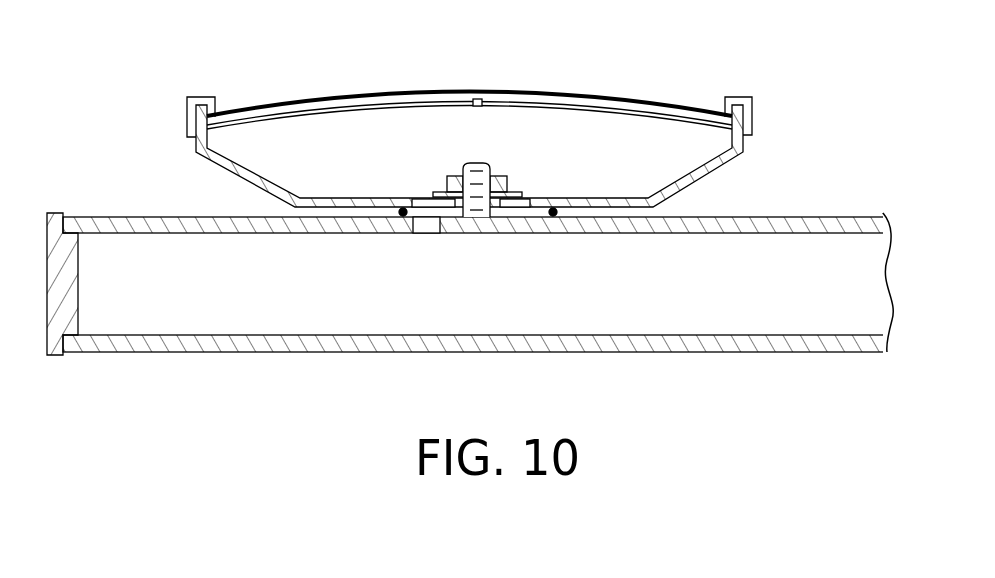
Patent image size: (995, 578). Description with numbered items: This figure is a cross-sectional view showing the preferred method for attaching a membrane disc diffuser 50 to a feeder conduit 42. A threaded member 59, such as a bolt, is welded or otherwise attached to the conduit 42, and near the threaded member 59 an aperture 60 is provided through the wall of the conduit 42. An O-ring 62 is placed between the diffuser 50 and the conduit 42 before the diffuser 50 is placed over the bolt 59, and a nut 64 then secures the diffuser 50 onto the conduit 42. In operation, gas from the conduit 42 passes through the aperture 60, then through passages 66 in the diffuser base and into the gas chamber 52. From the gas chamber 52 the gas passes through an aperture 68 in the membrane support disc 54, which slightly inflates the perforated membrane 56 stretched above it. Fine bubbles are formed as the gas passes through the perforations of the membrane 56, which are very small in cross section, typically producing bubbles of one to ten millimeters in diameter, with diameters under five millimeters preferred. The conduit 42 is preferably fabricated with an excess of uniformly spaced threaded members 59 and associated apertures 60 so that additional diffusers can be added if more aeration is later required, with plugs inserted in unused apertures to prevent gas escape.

The conduit 42 is at (191, 216).
The membrane disc diffuser 50 is at (272, 70).
The gas chamber 52 is at (617, 178).
The membrane support disc 54 is at (404, 108).
The perforated membrane 56 is at (427, 90).
The threaded member 59 is at (478, 162).
The aperture 60 is at (428, 233).
The O-ring 62 is at (400, 211).
The nut 64 is at (447, 187).
The passages 66 is at (533, 200).
The aperture in support plate 68 is at (478, 106).